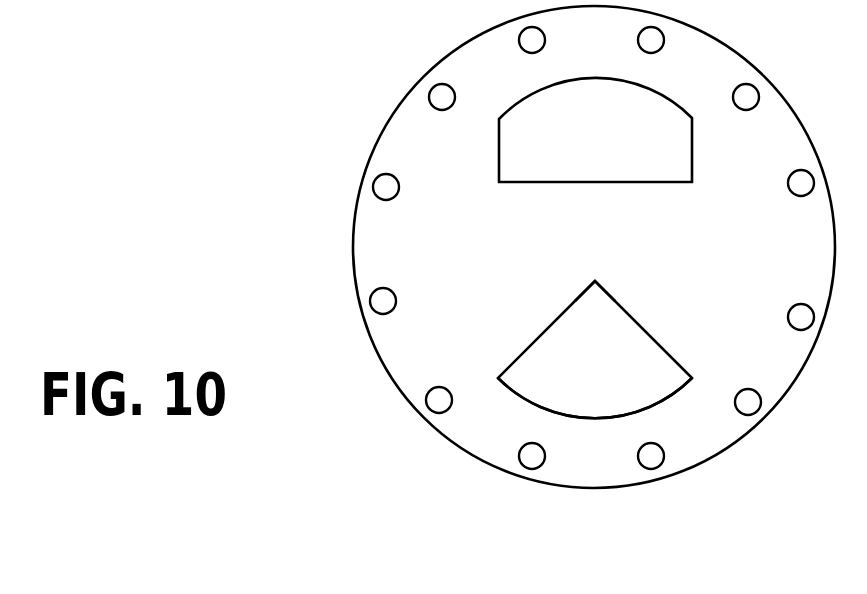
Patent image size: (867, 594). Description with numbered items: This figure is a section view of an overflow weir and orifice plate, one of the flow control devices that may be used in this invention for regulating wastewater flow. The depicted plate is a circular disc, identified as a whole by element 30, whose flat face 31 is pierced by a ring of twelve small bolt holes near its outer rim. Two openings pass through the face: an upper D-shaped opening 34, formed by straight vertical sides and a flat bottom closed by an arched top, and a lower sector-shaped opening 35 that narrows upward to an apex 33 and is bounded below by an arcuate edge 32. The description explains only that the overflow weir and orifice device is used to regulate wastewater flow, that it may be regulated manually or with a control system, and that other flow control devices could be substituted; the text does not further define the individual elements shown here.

The indexing plate 30 is at (330, 200).
The plate body with bolt holes 31 is at (491, 276).
The arcuate edge of sector opening 32 is at (670, 397).
The apex of sector opening 33 is at (605, 288).
The D-shaped opening 34 is at (640, 182).
The sector-shaped opening 35 is at (613, 375).